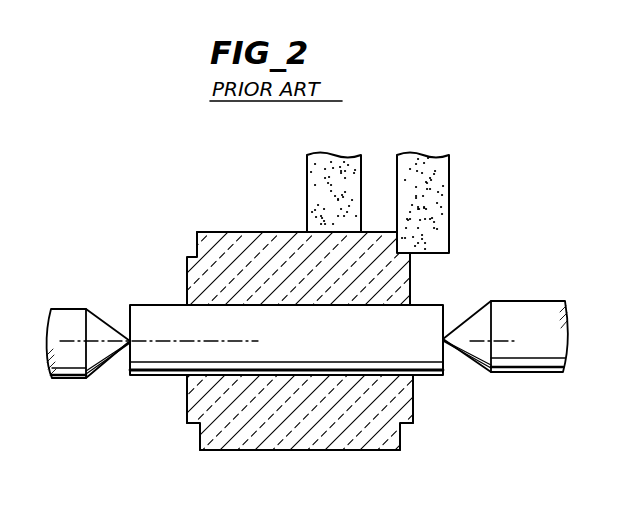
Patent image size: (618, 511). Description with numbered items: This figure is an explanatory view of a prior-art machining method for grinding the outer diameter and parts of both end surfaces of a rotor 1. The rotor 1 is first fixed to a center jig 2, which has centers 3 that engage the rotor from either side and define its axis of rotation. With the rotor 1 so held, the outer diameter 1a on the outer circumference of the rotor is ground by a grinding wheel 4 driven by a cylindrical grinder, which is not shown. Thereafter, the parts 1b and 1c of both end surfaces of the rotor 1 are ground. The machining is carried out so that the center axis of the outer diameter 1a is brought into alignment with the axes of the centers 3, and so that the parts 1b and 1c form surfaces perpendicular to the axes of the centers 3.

The rotor 1 is at (309, 317).
The outer diameter 1a is at (228, 232).
The part of end surface 1b is at (197, 440).
The part of end surface 1c is at (401, 438).
The center jig 2 is at (150, 306).
The centers 3 is at (76, 378).
The grinding wheel 4 is at (307, 186).